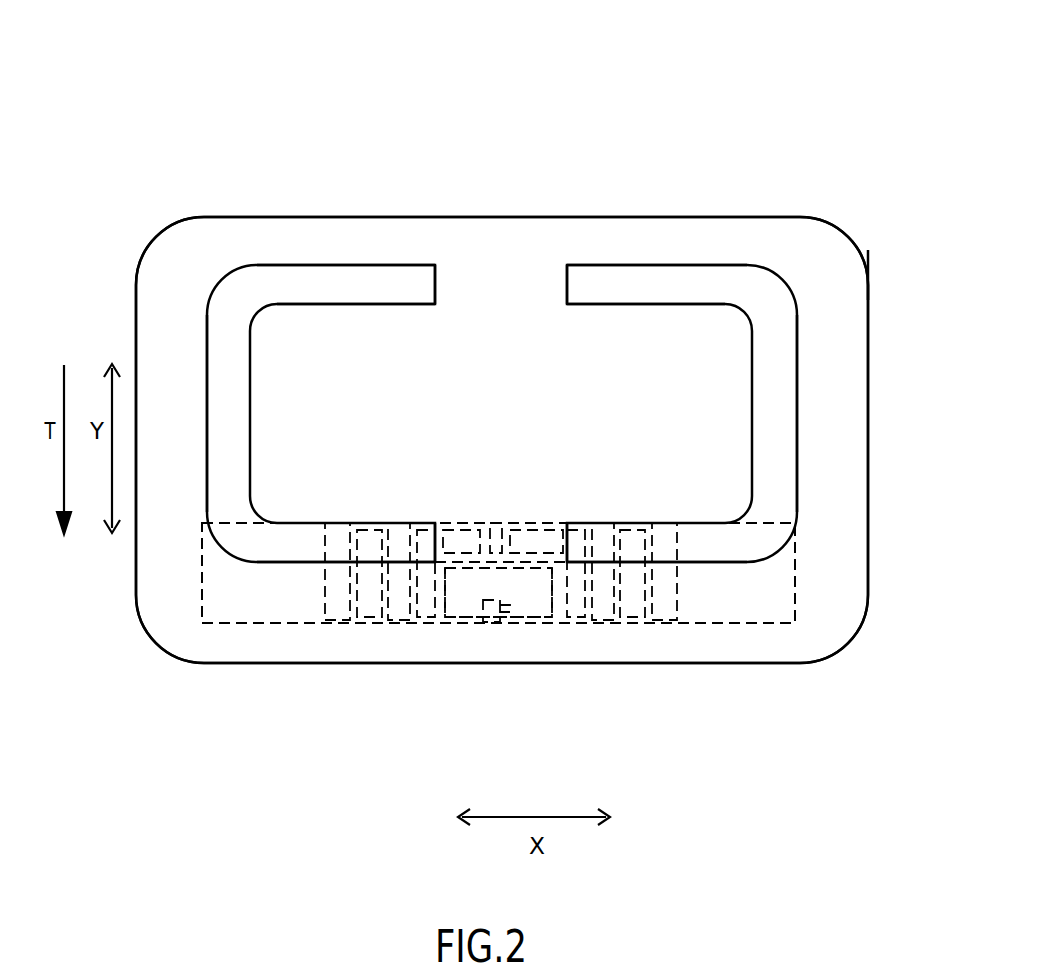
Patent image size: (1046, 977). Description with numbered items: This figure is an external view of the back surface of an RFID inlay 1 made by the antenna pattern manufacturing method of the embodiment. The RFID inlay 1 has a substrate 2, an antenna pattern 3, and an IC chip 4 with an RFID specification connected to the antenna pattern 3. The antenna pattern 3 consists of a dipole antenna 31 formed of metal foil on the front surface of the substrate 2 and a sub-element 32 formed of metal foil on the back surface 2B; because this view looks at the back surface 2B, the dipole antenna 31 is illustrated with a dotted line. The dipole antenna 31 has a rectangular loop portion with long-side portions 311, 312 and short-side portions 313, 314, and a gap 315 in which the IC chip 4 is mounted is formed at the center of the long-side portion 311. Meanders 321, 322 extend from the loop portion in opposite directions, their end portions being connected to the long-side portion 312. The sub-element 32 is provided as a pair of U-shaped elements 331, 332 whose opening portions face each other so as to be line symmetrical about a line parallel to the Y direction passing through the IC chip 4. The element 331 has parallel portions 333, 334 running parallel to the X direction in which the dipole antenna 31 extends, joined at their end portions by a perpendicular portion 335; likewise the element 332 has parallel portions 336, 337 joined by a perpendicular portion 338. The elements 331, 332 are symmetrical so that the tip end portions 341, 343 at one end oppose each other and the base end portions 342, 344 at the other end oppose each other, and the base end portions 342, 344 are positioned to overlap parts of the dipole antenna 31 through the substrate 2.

The RFID inlay 1 is at (513, 83).
The substrate 2 is at (838, 228).
The back surface 2B is at (842, 278).
The antenna pattern 3 is at (918, 452).
The dipole antenna 31 is at (805, 557).
The sub-element 32 is at (798, 490).
The long-side portion 311 is at (484, 600).
The long-side portion 312 is at (535, 625).
The short-side portion 313 is at (575, 625).
The short-side portion 314 is at (447, 590).
The gap 315 is at (508, 622).
The meander 321 is at (518, 508).
The meander 322 is at (355, 508).
The U-shaped element 331 is at (346, 265).
The U-shaped element 332 is at (616, 265).
The parallel portion 333 is at (295, 282).
The parallel portion 334 is at (302, 545).
The perpendicular portion 335 is at (225, 405).
The parallel portion 336 is at (666, 278).
The parallel portion 337 is at (683, 550).
The perpendicular portion 338 is at (780, 402).
The tip end portion 341 is at (437, 283).
The base end portion 342 is at (436, 537).
The tip end portion 343 is at (567, 283).
The base end portion 344 is at (566, 537).
The IC chip 4 is at (502, 607).